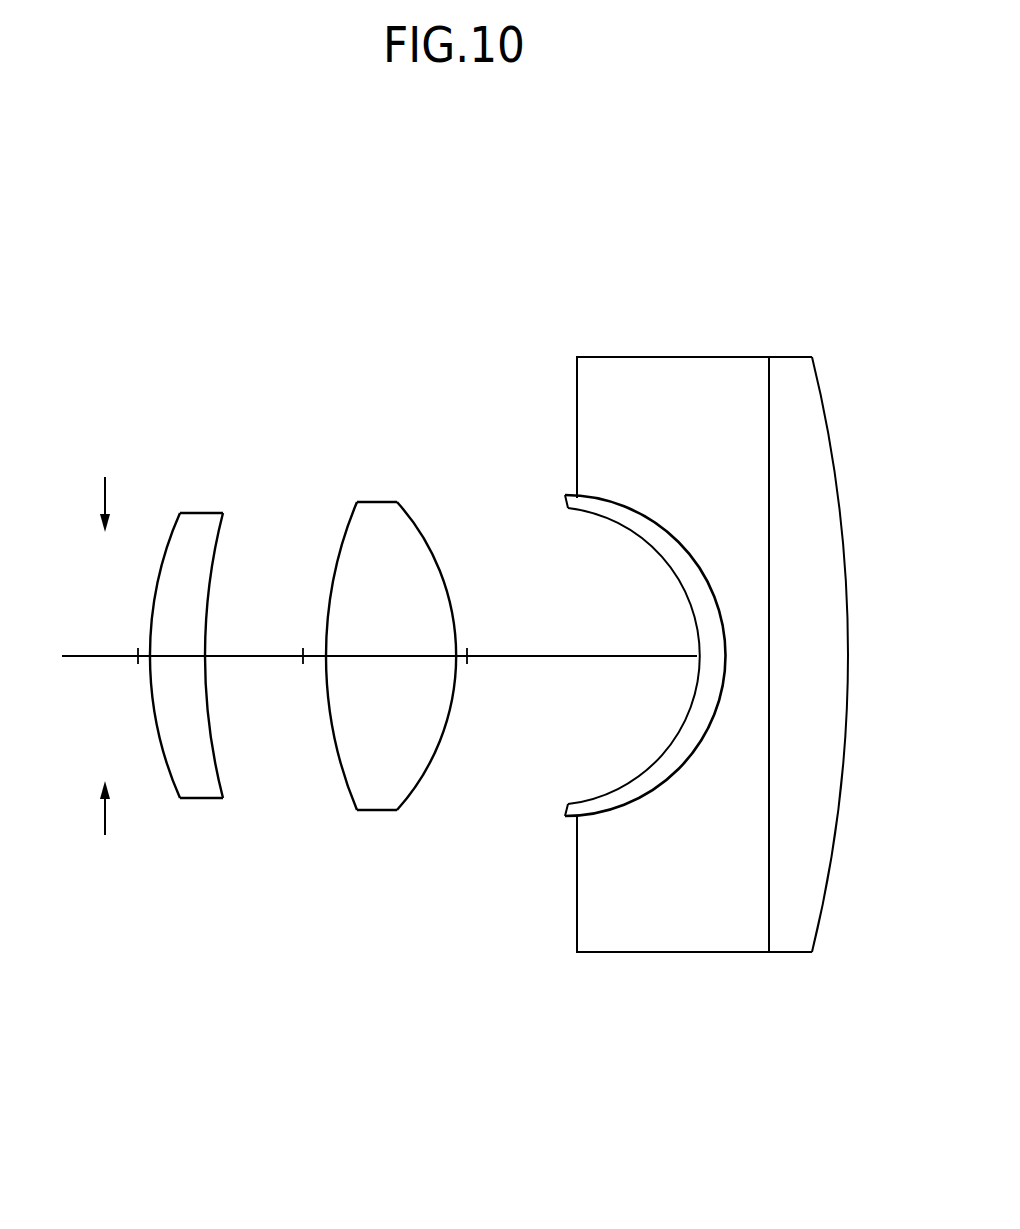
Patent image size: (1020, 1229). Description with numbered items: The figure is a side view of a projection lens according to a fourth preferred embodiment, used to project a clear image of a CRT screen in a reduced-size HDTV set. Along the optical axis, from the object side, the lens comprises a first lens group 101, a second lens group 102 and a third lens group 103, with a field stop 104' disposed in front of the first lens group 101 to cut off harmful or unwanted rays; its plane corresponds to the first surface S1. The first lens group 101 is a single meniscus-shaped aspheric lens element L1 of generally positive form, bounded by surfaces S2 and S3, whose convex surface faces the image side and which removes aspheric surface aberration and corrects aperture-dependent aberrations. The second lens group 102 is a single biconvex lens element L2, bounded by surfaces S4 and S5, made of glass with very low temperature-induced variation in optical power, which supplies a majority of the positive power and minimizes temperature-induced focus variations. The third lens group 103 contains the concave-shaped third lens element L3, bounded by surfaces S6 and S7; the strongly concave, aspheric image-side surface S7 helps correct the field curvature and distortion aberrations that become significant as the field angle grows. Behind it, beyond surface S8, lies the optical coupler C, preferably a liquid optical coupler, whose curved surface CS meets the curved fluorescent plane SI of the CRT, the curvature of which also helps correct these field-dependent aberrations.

The lens surface S1 is at (105, 492).
The lens surface S2 is at (151, 613).
The lens surface S3 is at (207, 605).
The lens surface S4 is at (327, 622).
The lens surface S5 is at (451, 595).
The lens surface S6 is at (667, 567).
The aspheric surface S7 is at (628, 508).
The lens surface S8 is at (768, 510).
The meniscus-shaped aspheric lens element L1 is at (167, 616).
The biconvex lens element L2 is at (376, 621).
The concave-shaped third lens element L3 is at (619, 625).
The optical coupler C is at (735, 613).
The curved surface CS is at (852, 652).
The fluorescent plane SI is at (840, 508).
The first lens group 101 is at (167, 689).
The second lens group 102 is at (376, 688).
The third lens group 103 is at (702, 658).
The field stop 104' is at (99, 656).